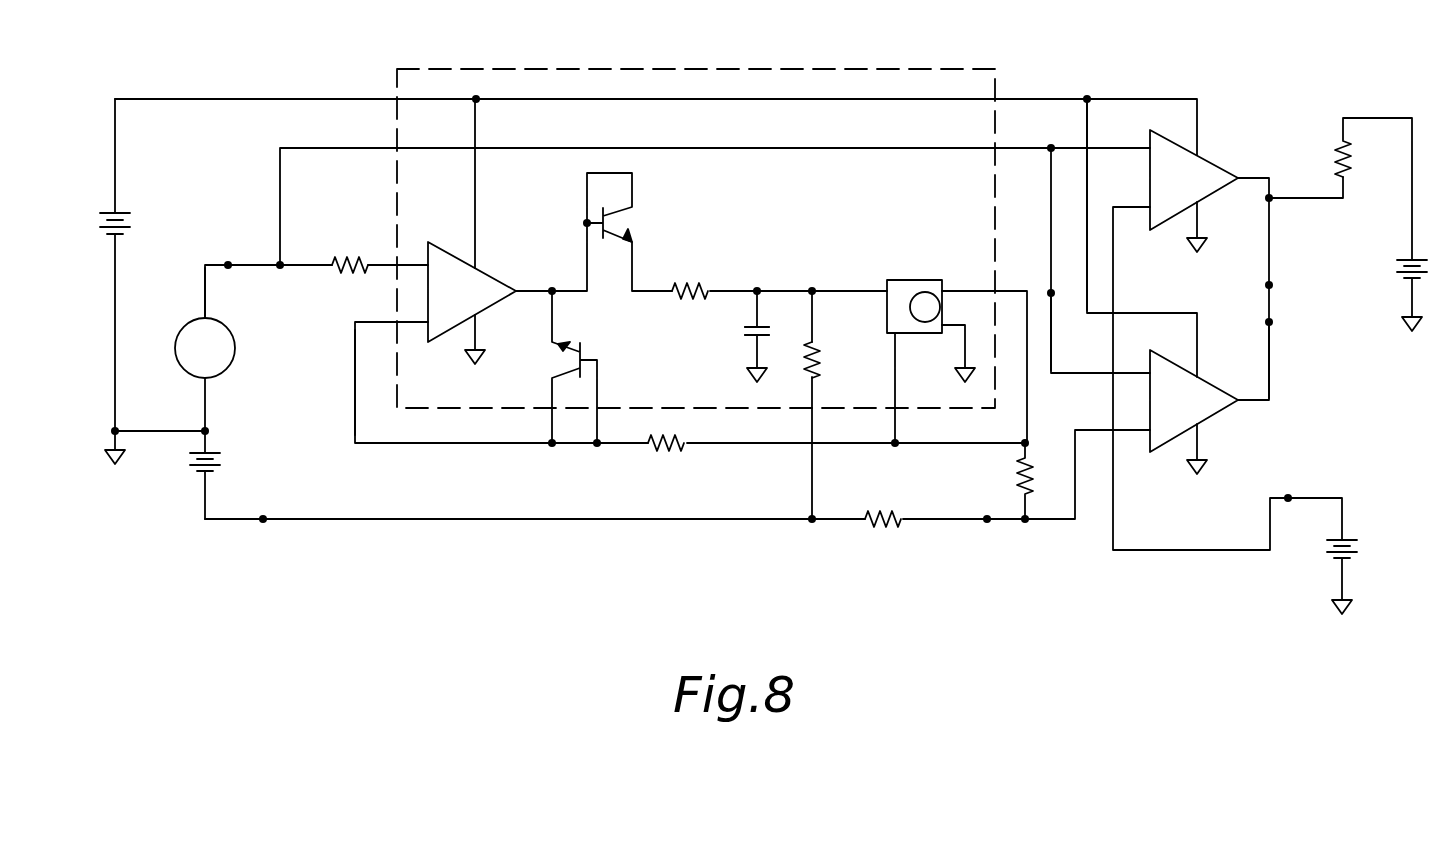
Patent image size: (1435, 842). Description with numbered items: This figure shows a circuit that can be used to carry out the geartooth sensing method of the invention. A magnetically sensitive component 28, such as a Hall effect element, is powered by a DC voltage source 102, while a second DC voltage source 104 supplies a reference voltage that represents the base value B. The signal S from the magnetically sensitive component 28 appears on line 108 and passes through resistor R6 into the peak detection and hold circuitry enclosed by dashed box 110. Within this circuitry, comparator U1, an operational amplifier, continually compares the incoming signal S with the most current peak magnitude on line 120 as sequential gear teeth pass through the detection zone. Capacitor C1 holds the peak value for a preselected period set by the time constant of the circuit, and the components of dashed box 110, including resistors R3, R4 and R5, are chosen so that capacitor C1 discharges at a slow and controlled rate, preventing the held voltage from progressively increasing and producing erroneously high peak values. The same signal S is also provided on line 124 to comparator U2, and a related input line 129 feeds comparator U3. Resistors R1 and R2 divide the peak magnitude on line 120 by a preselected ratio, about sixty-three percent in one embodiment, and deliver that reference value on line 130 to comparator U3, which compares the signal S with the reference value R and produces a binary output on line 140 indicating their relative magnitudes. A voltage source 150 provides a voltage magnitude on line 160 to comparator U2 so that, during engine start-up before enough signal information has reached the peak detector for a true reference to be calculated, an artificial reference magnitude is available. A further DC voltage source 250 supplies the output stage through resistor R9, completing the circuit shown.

The DC voltage source 102 is at (128, 224).
The DC voltage source 104 is at (222, 457).
The line 108 is at (205, 290).
The magnetically sensitive component 28 is at (235, 345).
The peak detection and hold circuitry 110 is at (698, 69).
The line 120 is at (960, 290).
The line 124 is at (1108, 148).
The comparator U3 input line 129 is at (1090, 373).
The line 130 is at (1130, 432).
The line 140 is at (1270, 358).
The voltage source 150 is at (1345, 537).
The line 160 is at (1113, 527).
The DC voltage source 250 is at (1400, 266).
The resistor R1 is at (1022, 470).
The resistor R2 is at (890, 515).
The resistor R3 is at (666, 450).
The resistor R4 is at (820, 350).
The resistor R5 is at (690, 285).
The resistor R6 is at (350, 262).
The resistor R9 is at (1340, 150).
The capacitor C1 is at (745, 331).
The comparator U1 is at (490, 308).
The comparator U2 is at (1218, 165).
The comparator U3 is at (1210, 385).